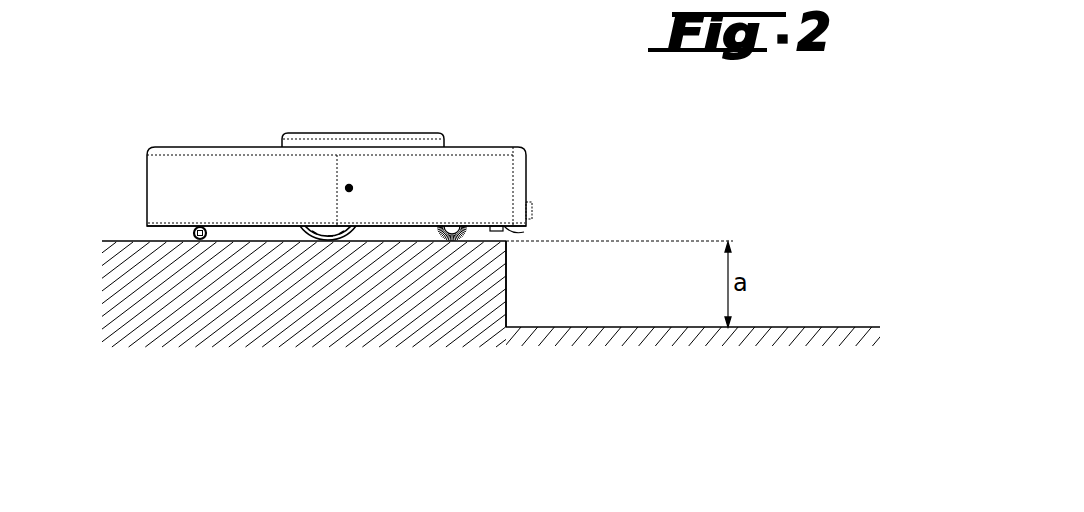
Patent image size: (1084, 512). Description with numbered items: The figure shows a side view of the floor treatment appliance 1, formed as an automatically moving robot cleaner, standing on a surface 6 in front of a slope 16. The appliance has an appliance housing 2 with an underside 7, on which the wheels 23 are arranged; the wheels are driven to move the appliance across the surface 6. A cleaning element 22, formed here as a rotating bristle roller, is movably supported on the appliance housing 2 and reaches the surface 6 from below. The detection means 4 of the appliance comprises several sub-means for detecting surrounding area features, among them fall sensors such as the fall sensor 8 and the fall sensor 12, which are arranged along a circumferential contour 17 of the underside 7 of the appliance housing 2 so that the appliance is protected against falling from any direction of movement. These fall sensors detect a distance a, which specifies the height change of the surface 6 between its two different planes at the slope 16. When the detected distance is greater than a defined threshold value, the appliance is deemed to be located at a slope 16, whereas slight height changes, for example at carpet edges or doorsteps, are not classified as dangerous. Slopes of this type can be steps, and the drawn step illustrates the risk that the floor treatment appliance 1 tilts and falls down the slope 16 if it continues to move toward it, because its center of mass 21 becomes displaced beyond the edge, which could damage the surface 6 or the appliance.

The floor treatment appliance 1 is at (344, 121).
The appliance housing 2 is at (199, 147).
The detection means 4 is at (355, 133).
The surface 6 is at (123, 240).
The underside 7 is at (248, 226).
The fall sensor 8 is at (515, 230).
The fall sensor 12 is at (497, 232).
The slope 16 is at (506, 268).
The circumferential contour 17 is at (178, 208).
The center of mass 21 is at (351, 192).
The cleaning element 22 is at (450, 243).
The wheels 23 is at (320, 242).